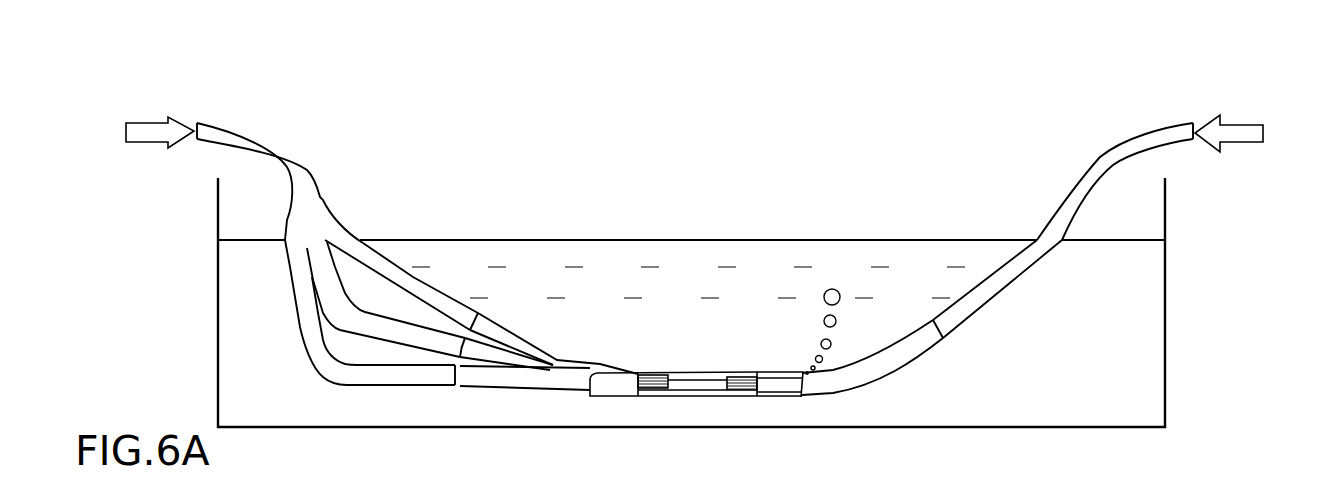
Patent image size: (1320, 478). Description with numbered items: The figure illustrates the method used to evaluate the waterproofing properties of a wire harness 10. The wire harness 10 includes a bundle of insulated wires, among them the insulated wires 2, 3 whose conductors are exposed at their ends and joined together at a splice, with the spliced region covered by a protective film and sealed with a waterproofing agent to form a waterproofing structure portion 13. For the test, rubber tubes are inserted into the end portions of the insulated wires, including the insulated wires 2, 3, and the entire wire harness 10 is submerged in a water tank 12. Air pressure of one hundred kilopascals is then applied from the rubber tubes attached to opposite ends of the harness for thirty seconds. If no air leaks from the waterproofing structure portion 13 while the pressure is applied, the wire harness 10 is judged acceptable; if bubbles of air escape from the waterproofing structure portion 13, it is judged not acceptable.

The insulated wire 2 is at (487, 352).
The insulated wire 3 is at (533, 378).
The wire harness 10 is at (765, 418).
The water tank 12 is at (1165, 345).
The waterproofing structure portion 13 is at (691, 405).